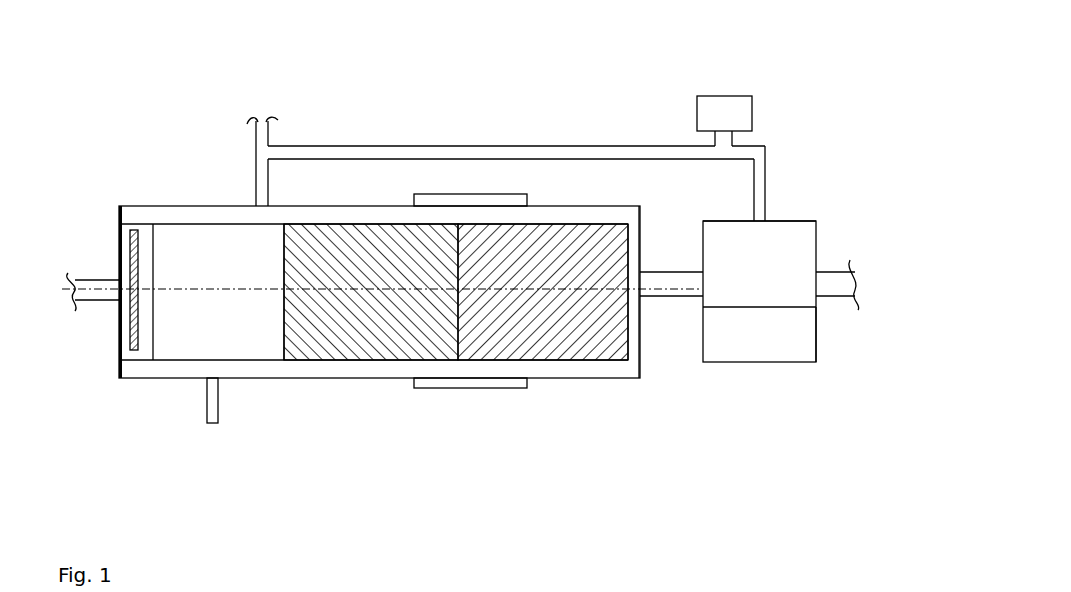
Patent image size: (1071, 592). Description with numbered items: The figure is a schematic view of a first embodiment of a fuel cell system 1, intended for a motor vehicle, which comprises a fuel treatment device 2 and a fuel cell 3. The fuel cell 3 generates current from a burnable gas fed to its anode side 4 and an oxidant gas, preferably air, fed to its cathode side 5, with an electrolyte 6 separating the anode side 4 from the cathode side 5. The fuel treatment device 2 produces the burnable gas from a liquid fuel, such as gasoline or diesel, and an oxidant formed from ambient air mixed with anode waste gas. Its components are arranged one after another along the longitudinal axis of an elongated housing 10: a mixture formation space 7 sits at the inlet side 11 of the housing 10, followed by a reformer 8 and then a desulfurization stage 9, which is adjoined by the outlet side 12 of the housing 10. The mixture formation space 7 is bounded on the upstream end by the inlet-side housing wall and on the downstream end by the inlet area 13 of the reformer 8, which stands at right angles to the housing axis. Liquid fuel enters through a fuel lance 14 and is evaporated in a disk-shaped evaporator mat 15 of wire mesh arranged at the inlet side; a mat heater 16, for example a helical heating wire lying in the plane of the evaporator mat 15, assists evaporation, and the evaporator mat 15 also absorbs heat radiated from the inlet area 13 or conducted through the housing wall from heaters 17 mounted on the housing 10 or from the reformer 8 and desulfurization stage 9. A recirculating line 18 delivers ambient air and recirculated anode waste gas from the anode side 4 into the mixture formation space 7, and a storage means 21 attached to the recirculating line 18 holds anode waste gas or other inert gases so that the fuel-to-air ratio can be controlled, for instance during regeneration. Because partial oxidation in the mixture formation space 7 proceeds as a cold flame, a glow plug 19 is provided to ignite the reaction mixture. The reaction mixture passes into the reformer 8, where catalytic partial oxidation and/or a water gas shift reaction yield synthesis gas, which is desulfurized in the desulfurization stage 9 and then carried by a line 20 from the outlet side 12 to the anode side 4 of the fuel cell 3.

The fuel cell system 1 is at (197, 63).
The fuel treatment device 2 is at (523, 88).
The fuel cell 3 is at (760, 362).
The anode side 4 is at (785, 220).
The cathode side 5 is at (817, 340).
The electrolyte 6 is at (777, 307).
The mixture formation space 7 is at (207, 323).
The reformer 8 is at (353, 360).
The desulfurization stage 9 is at (617, 358).
The housing 10 is at (190, 207).
The inlet side 11 is at (119, 233).
The outlet side 12 is at (645, 228).
The inlet area 13 is at (283, 350).
The fuel lance 14 is at (100, 303).
The evaporator mat 15 is at (132, 363).
The mat heater 16 is at (128, 280).
The heaters 17 is at (477, 388).
The recirculating line 18 is at (483, 145).
The glow plug 19 is at (203, 412).
The line 20 is at (662, 302).
The storage means 21 is at (752, 110).